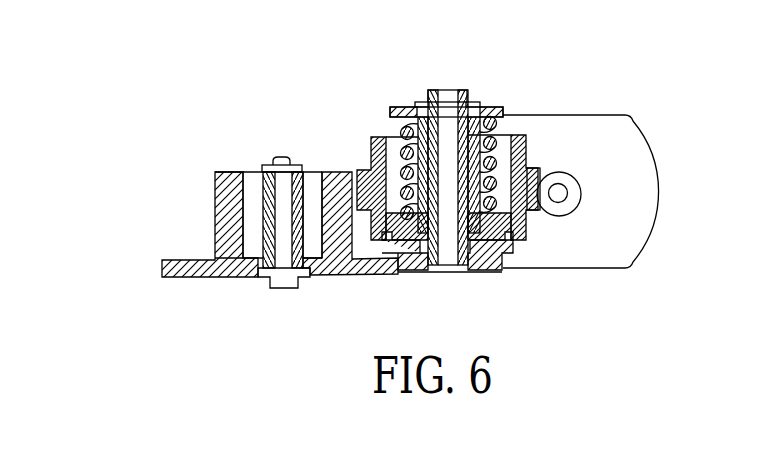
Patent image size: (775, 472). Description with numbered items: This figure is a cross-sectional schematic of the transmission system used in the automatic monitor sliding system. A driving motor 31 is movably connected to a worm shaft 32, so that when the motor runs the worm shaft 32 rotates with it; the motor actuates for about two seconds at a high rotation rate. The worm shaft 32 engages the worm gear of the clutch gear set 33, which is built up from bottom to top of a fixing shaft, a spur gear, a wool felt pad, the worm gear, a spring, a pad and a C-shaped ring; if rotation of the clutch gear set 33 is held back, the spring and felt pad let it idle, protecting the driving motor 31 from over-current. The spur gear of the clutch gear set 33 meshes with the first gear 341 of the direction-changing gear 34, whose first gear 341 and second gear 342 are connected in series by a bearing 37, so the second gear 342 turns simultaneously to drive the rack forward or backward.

The driving motor 31 is at (627, 165).
The worm shaft 32 is at (563, 212).
The clutch gear set 33 is at (461, 76).
The direction-changing gear 34 is at (270, 140).
The first gear 341 is at (218, 278).
The second gear 342 is at (220, 185).
The bearing 37 is at (288, 283).